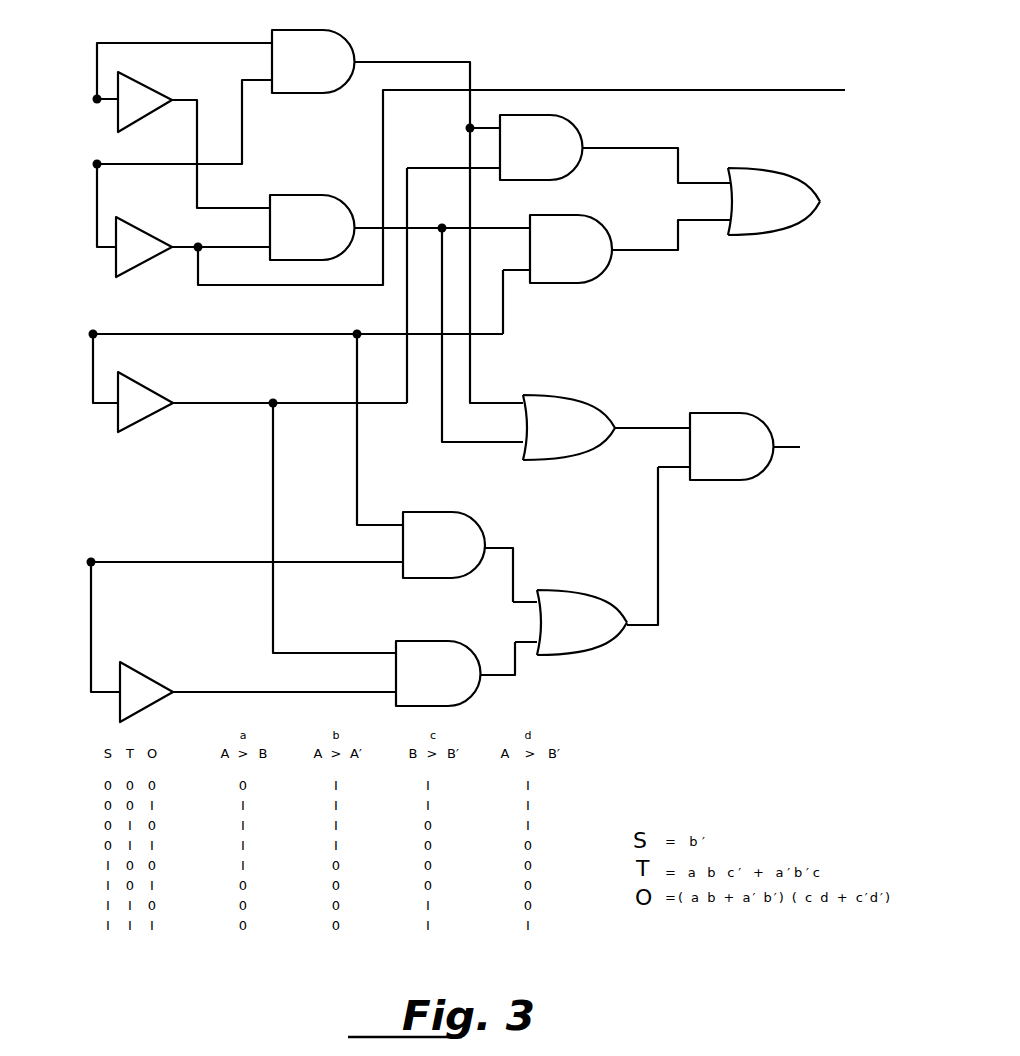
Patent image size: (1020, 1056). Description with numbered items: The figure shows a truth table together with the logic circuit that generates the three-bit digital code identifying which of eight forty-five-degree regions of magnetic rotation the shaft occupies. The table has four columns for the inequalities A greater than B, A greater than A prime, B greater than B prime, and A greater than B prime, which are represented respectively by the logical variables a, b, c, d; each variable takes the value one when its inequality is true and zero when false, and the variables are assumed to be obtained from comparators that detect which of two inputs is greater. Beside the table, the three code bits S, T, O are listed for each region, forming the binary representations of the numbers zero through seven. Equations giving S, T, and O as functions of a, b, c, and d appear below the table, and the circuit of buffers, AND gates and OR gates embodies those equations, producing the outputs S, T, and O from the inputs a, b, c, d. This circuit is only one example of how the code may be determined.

The logical variable a is at (97, 99).
The logical variable b is at (97, 164).
The logical variable c is at (93, 334).
The logical variable d is at (91, 562).
The digital code bit S is at (800, 90).
The digital code bit T is at (820, 202).
The digital code bit O is at (800, 447).